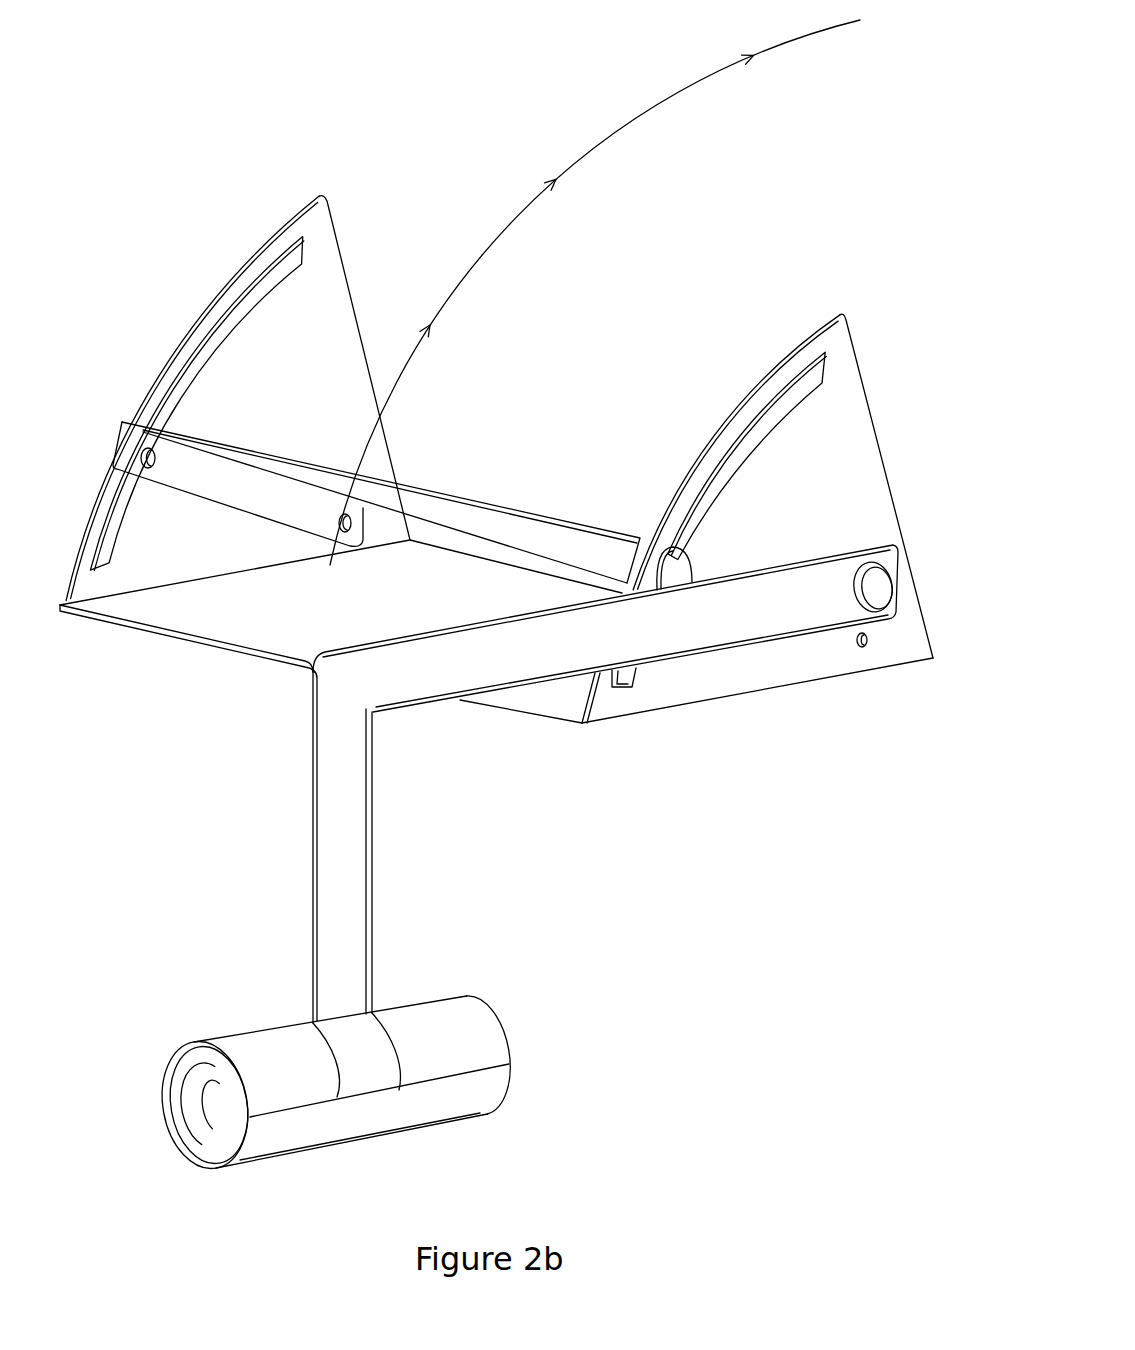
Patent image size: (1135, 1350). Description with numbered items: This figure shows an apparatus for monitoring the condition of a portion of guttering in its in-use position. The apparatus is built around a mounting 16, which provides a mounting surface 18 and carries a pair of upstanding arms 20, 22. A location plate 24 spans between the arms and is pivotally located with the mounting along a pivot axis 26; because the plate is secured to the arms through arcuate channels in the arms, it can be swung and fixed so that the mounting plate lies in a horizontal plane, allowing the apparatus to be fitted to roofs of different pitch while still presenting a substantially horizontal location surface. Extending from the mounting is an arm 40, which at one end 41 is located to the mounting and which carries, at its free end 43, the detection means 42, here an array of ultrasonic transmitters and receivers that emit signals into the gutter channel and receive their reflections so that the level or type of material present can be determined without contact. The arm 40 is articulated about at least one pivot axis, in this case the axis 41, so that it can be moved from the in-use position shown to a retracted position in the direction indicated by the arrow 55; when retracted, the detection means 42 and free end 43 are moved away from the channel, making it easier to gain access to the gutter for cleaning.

The mounting 16 is at (297, 630).
The mounting surface 18 is at (225, 593).
The arm 20 is at (325, 310).
The arm 22 is at (827, 457).
The location plate 24 is at (527, 505).
The pivot axis 26 is at (866, 645).
The arm 40 is at (653, 647).
The end / pivot axis 41 is at (895, 542).
The detection means 42 is at (472, 1093).
The free end 43 is at (458, 1028).
The arrow 55 is at (633, 122).